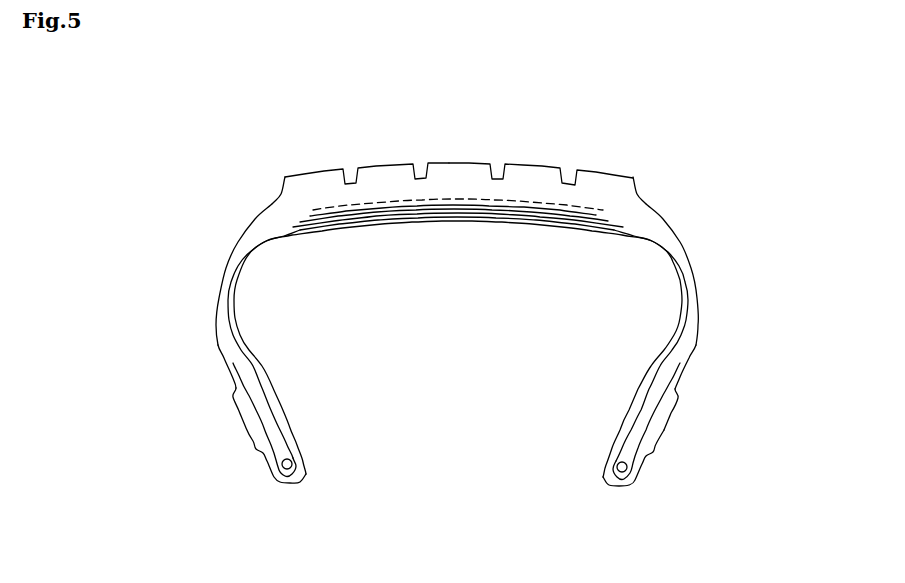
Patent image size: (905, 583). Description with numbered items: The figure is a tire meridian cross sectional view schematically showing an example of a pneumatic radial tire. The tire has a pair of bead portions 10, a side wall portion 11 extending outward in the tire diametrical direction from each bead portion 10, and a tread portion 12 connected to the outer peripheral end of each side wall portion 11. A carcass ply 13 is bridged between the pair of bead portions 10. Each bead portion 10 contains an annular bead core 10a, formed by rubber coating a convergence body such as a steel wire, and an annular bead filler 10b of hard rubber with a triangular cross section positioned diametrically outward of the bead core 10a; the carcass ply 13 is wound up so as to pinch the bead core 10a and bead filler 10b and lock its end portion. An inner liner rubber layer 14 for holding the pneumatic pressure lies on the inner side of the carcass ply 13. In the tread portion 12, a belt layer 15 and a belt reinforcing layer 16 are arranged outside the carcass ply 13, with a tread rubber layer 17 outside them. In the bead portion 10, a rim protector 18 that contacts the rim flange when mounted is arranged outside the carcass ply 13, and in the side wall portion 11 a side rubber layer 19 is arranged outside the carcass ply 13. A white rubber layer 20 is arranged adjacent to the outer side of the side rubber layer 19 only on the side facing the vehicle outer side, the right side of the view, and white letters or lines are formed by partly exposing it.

The bead portion 10 is at (262, 483).
The bead core 10a is at (289, 463).
The bead filler 10b is at (281, 438).
The side wall portion 11 is at (208, 278).
The tread portion 12 is at (381, 157).
The carcass ply 13 is at (652, 248).
The inner liner rubber layer 14 is at (390, 223).
The belt layer 15 is at (462, 207).
The belt reinforcing layer 16 is at (481, 200).
The tread rubber layer 17 is at (533, 170).
The rim protector 18 is at (647, 452).
The side rubber layer 19 is at (222, 335).
The white rubber layer 20 is at (667, 417).